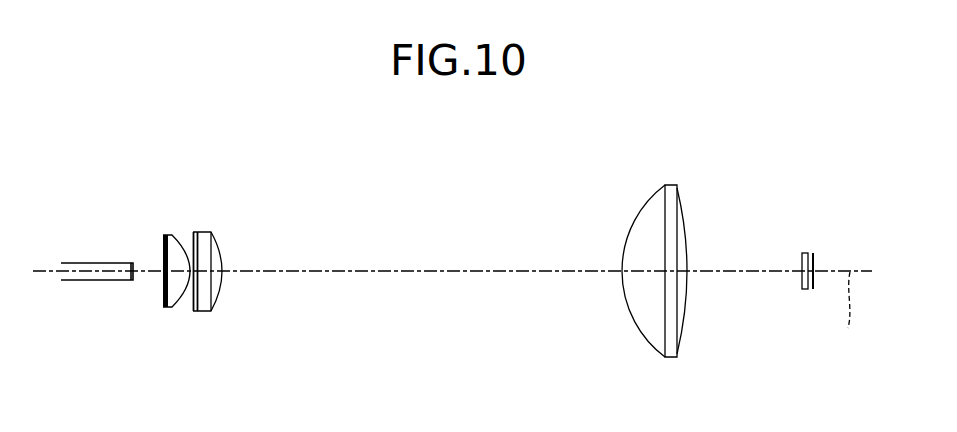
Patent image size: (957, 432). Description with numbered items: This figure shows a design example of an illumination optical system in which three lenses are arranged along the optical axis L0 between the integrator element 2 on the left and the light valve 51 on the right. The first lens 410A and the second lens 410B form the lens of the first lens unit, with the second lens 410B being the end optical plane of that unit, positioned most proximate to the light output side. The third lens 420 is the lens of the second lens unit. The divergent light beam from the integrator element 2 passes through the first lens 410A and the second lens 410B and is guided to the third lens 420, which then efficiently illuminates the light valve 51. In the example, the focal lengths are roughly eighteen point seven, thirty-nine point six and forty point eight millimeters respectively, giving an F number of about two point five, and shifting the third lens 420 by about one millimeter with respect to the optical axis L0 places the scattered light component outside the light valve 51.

The integrator element 2 is at (125, 262).
The first lens 410A is at (172, 235).
The second lens 410B is at (219, 250).
The third lens 420 is at (651, 194).
The light valve 51 is at (810, 253).
The optical axis L0 is at (845, 315).